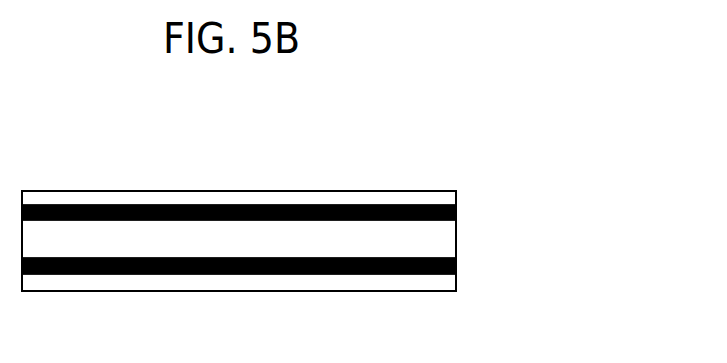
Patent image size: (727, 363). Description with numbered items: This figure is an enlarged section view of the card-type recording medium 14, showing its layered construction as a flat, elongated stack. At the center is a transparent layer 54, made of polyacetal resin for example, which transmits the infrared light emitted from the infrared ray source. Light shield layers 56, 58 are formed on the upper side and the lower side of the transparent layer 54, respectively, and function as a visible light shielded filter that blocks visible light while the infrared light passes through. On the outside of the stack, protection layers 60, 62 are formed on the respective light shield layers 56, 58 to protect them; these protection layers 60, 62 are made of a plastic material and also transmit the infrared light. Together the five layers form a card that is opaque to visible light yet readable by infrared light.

The card-type recording medium 14 is at (318, 162).
The protection layer 60 is at (433, 202).
The light shield layer 56 is at (455, 212).
The transparent layer 54 is at (440, 237).
The light shield layer 58 is at (455, 267).
The protection layer 62 is at (427, 283).